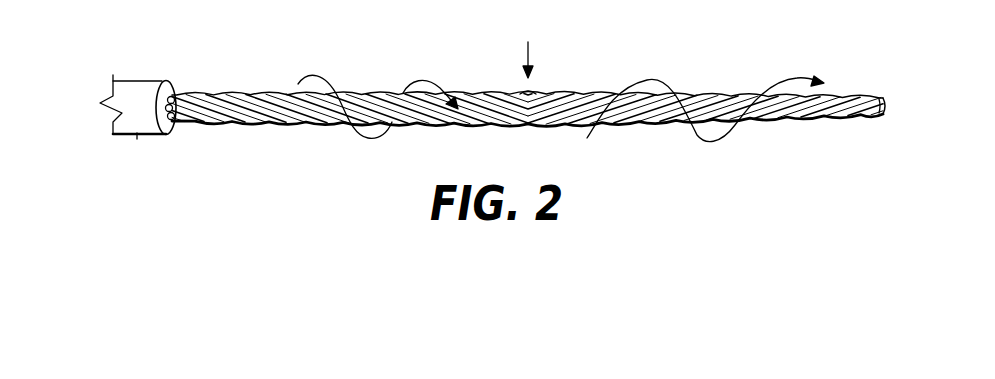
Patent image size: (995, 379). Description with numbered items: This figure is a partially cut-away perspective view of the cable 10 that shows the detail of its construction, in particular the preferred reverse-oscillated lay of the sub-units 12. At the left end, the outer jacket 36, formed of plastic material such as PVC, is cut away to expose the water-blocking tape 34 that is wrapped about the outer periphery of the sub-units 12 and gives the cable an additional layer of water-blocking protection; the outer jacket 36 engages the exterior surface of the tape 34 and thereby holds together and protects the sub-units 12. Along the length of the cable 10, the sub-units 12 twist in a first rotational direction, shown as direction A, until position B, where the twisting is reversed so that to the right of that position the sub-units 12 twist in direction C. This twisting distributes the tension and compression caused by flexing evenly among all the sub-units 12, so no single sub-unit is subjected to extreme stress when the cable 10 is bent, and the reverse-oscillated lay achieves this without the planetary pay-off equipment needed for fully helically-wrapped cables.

The cable 10 is at (126, 53).
The sub-units 12 is at (200, 93).
The water-blocking tape 34 is at (154, 96).
The outer jacket 36 is at (138, 128).